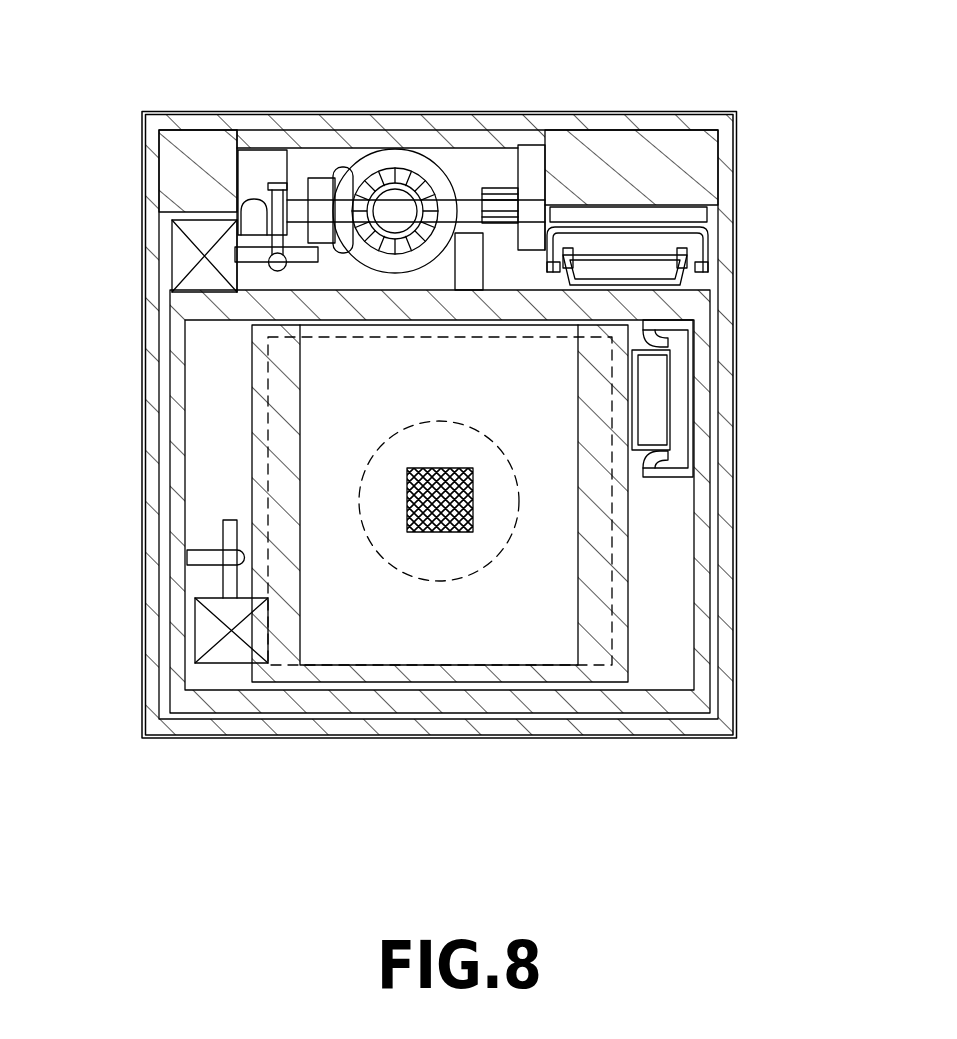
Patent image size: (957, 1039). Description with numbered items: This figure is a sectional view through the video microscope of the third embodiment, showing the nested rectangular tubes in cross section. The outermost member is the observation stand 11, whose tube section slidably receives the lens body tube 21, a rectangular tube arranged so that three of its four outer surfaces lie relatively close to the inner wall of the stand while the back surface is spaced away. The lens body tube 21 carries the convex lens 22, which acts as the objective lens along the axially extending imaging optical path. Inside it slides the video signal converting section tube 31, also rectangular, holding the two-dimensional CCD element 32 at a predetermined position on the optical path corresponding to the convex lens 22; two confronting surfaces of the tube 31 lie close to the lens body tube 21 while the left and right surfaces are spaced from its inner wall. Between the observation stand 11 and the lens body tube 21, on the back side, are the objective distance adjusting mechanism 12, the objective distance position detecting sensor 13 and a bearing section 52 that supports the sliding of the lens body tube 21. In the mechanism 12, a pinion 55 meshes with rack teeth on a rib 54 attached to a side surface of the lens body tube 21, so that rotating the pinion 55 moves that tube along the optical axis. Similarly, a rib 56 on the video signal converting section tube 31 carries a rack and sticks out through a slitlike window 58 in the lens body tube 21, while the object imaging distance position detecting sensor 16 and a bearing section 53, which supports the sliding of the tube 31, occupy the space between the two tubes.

The observation stand 11 is at (575, 112).
The objective distance adjusting mechanism 12 is at (323, 172).
The objective distance position detecting sensor 13 is at (208, 263).
The object imaging distance position detecting sensor 16 is at (223, 607).
The lens body tube 21 is at (705, 348).
The convex lens 22 is at (452, 579).
The video signal converting section tube 31 is at (568, 670).
The two-dimensional CCD element 32 is at (450, 468).
The bearing section 52 is at (644, 227).
The bearing section 53 is at (667, 453).
The rib 54 is at (471, 238).
The pinion 55 is at (505, 180).
The rib 56 is at (457, 234).
The slitlike window 58 is at (478, 303).